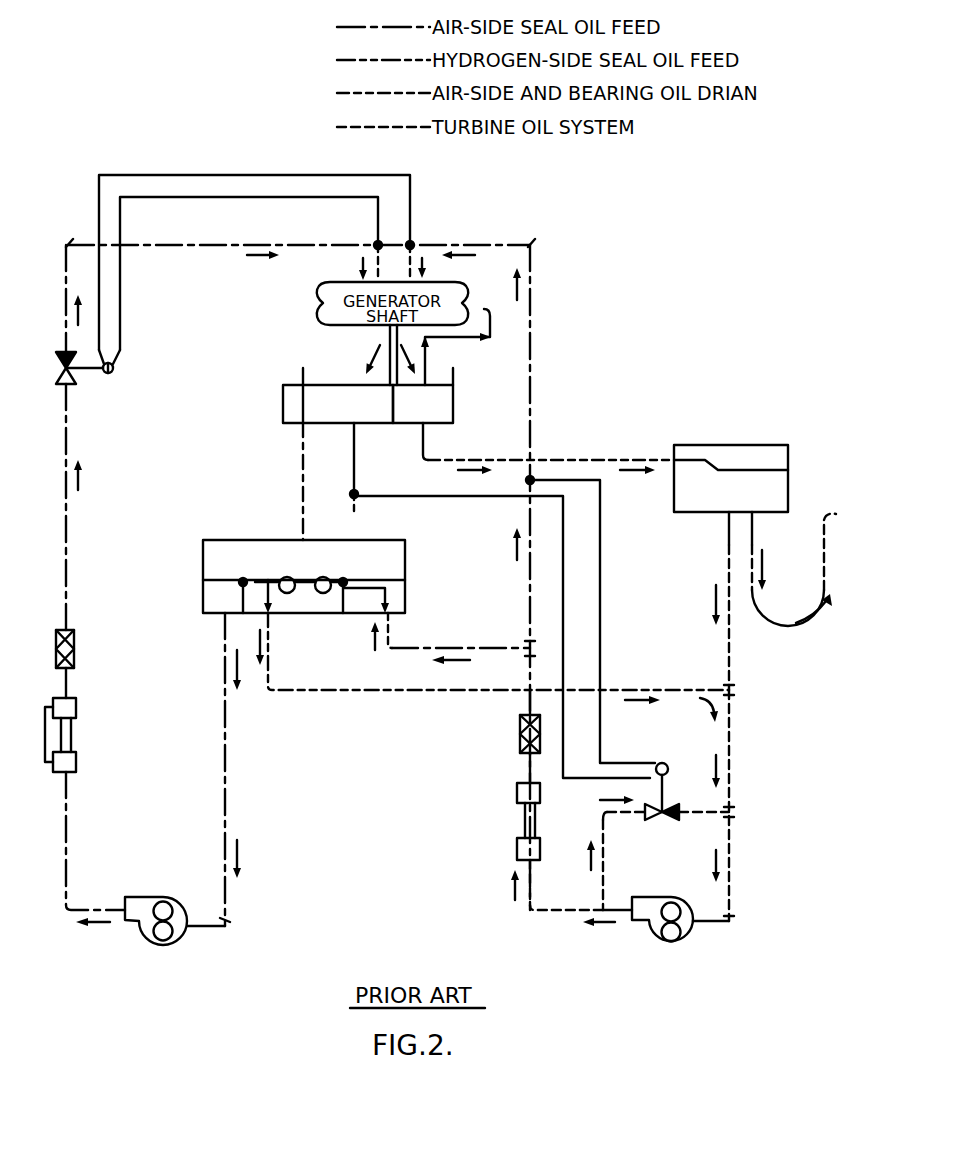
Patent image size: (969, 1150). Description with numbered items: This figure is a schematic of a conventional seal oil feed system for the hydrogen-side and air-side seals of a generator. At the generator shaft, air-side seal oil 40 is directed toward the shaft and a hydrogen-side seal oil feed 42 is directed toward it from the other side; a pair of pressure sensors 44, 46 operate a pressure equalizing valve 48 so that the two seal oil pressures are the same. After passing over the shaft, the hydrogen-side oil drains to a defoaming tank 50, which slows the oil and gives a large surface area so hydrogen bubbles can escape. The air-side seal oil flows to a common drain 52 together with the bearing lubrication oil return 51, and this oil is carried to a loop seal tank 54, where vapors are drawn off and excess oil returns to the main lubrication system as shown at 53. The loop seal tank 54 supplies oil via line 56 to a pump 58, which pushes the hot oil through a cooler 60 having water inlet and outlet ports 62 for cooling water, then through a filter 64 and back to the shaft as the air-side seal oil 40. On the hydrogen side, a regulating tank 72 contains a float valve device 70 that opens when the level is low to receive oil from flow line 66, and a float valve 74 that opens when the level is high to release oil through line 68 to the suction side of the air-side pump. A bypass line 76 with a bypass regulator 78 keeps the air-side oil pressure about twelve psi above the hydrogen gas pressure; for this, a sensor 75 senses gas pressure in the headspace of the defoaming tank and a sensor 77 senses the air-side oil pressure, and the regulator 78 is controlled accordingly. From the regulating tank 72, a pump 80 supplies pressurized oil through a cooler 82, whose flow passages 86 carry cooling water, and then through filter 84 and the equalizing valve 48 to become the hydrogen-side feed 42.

The air-side seal oil 40 is at (413, 262).
The hydrogen-side seal oil feed 42 is at (372, 250).
The pressure sensor 44 is at (408, 245).
The pressure sensor 46 is at (376, 245).
The pressure equalizing valve 48 is at (88, 373).
The defoaming tank 50 is at (325, 400).
The bearing lubrication oil return 51 is at (496, 326).
The common drain 52 is at (432, 398).
The oil return to lubrication system 53 is at (778, 632).
The loop seal tank 54 is at (777, 454).
The line 56 is at (727, 662).
The pump 58 is at (684, 941).
The cooler 60 is at (543, 823).
The water inlet and outlet ports 62 is at (510, 850).
The filter 64 is at (520, 738).
The flow line 66 is at (468, 650).
The line 68 is at (345, 693).
The float valve device 70 is at (344, 570).
The regulating tank 72 is at (203, 557).
The float valve 74 is at (257, 570).
The sensor 75 is at (358, 498).
The bypass line 76 is at (606, 892).
The sensor 77 is at (533, 478).
The bypass regulator 78 is at (660, 822).
The pump 80 is at (178, 941).
The cooler 82 is at (78, 764).
The filter 84 is at (76, 650).
The flow passages 86 is at (48, 730).